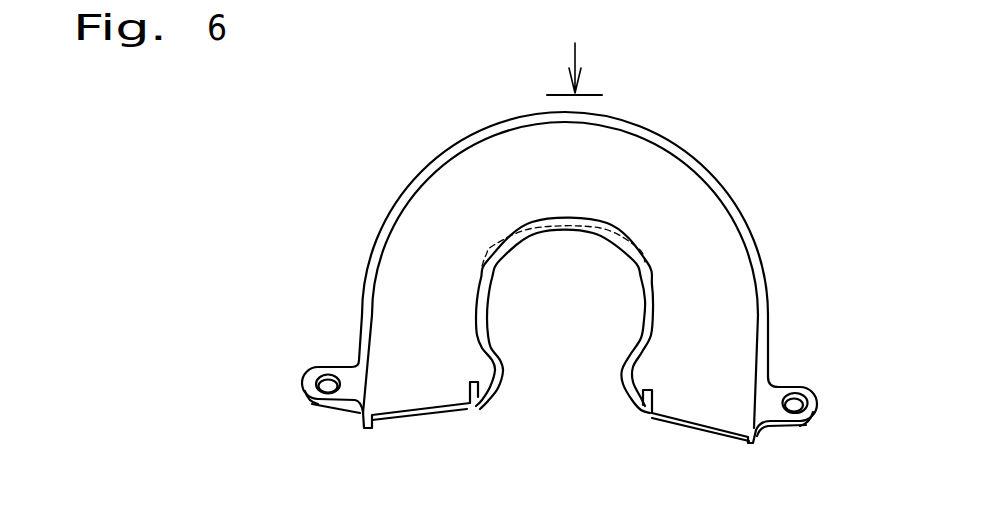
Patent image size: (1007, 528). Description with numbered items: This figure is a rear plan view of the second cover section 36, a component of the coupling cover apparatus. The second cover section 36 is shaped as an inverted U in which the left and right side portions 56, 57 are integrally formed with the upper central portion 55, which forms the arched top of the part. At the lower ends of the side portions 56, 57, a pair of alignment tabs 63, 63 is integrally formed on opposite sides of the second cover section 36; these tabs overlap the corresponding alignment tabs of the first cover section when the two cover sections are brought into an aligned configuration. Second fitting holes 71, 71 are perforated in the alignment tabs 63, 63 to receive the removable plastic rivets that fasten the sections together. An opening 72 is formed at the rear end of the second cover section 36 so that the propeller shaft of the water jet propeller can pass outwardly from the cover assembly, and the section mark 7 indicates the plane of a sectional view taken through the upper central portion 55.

The second cover section 36 is at (401, 165).
The upper central portion 55 is at (547, 150).
The left side portion 56 is at (398, 290).
The right side portion 57 is at (732, 301).
The alignment tabs 63 is at (313, 369).
The second fitting holes 71 is at (340, 391).
The opening 72 is at (490, 313).
The section line 7 is at (584, 63).